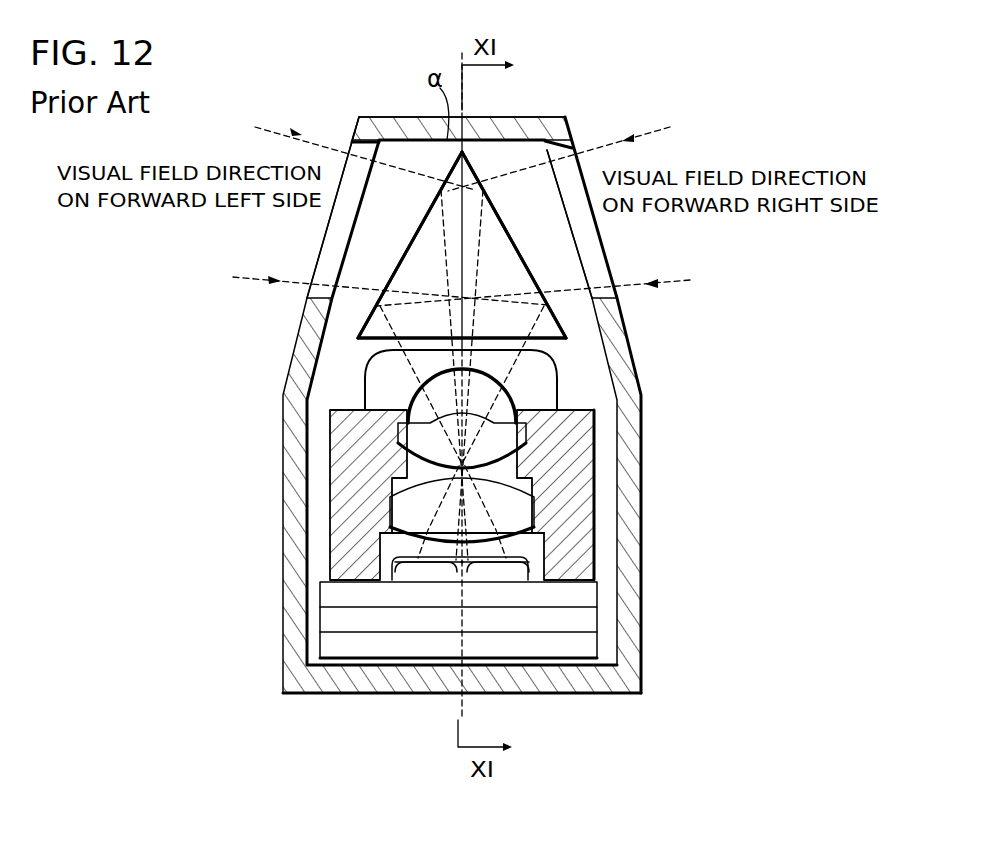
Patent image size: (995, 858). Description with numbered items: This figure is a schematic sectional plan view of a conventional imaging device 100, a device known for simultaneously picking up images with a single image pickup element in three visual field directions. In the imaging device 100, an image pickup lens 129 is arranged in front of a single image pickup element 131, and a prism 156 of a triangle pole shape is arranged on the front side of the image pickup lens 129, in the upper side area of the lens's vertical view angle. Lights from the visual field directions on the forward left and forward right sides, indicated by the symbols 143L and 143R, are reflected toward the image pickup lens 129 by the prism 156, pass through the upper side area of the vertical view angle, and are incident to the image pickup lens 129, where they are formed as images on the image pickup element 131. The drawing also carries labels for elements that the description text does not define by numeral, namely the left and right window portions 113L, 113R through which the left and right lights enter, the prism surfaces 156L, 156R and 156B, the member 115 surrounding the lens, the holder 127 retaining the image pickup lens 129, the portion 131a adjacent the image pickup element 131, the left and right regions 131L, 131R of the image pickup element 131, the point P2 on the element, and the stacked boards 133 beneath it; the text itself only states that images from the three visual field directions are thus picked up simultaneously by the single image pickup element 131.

The imaging device 100 is at (786, 84).
The left transparent window 113L is at (338, 233).
The right transparent window 113R is at (592, 247).
The light from visual field direction on forward left side 143L is at (273, 127).
The light from visual field direction on forward right side 143R is at (650, 127).
The prism 156 is at (388, 267).
The left prism face 156L is at (370, 315).
The right prism face 156R is at (559, 325).
The prism bottom face 156B is at (565, 339).
The inner partition / lens cover 115 is at (580, 399).
The image pickup lens 129 is at (372, 385).
The lens holder 127 is at (338, 533).
The image sensor mount 131a is at (372, 548).
The image pickup element 131 is at (445, 565).
The left imaging area 131L is at (428, 563).
The right imaging area 131R is at (494, 565).
The center point of image sensor P2 is at (462, 575).
The circuit boards 133 is at (583, 593).